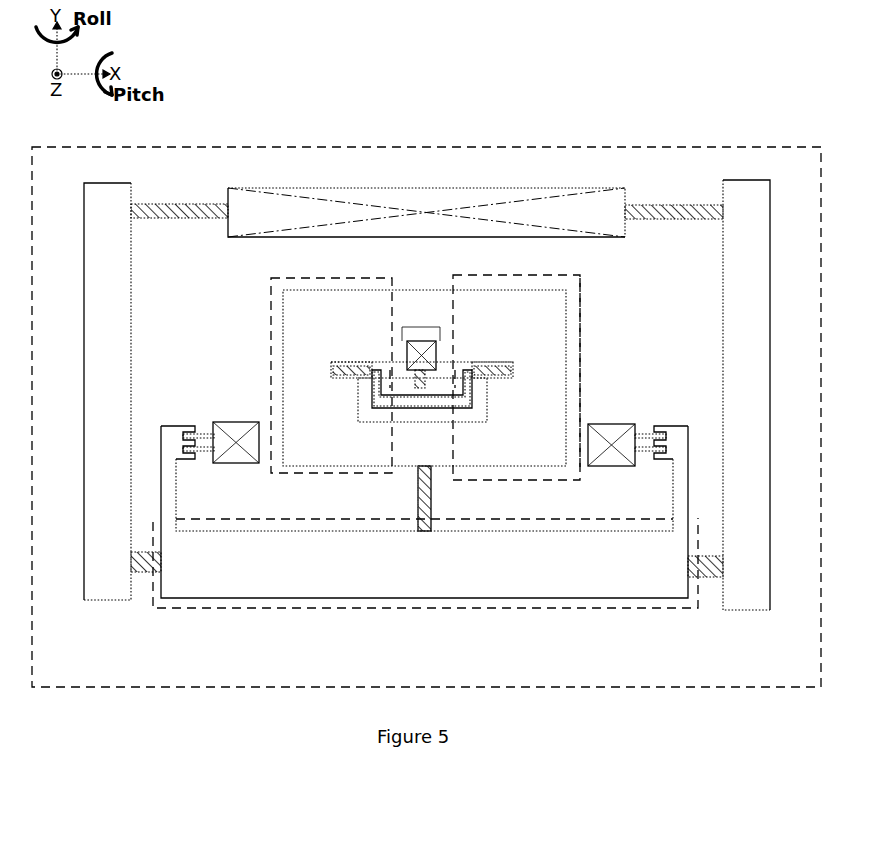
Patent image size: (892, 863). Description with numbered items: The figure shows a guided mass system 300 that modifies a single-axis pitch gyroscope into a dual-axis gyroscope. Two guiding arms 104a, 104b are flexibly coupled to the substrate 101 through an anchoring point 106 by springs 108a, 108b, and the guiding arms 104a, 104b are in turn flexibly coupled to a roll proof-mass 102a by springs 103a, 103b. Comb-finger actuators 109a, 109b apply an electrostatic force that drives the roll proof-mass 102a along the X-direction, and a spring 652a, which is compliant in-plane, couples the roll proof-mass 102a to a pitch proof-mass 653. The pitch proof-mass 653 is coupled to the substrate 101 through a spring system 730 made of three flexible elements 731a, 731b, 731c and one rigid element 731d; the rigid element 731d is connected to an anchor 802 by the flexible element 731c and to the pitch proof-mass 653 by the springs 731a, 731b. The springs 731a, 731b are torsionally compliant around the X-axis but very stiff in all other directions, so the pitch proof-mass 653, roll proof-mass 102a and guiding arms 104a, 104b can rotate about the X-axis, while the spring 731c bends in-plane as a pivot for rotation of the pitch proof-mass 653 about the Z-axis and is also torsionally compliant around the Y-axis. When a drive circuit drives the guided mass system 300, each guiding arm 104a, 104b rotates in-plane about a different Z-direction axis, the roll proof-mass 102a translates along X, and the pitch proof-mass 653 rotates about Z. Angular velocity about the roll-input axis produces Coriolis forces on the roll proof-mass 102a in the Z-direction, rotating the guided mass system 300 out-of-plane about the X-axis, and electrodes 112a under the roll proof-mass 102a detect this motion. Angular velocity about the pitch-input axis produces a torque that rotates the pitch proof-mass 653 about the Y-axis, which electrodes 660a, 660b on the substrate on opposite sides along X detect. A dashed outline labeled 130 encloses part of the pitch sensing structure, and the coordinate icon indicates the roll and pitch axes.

The substrate 101 is at (748, 147).
The guiding arm 104a is at (84, 281).
The guiding arm 104b is at (777, 289).
The anchoring point 106 is at (438, 188).
The spring 108a is at (190, 204).
The spring 108b is at (648, 207).
The lens assembly 130 is at (611, 271).
The electrode 660a is at (268, 385).
The electrode 660b is at (582, 363).
The pitch proof-mass 653 is at (539, 333).
The anchor 802 is at (432, 352).
The spring system 730 is at (427, 411).
The flexible element (spring) 731a is at (358, 378).
The flexible element (spring) 731b is at (488, 378).
The flexible element (spring) 731c is at (417, 380).
The rigid element 731d is at (442, 403).
The spring 652a is at (430, 512).
The comb fingers (actuator) 109a is at (228, 465).
The comb fingers (actuator) 109b is at (620, 467).
The electrodes 112a is at (310, 609).
The proof-mass (roll proof-mass) 102a is at (626, 600).
The spring 103a is at (140, 572).
The spring 103b is at (707, 577).
The guided mass system 300 is at (437, 721).